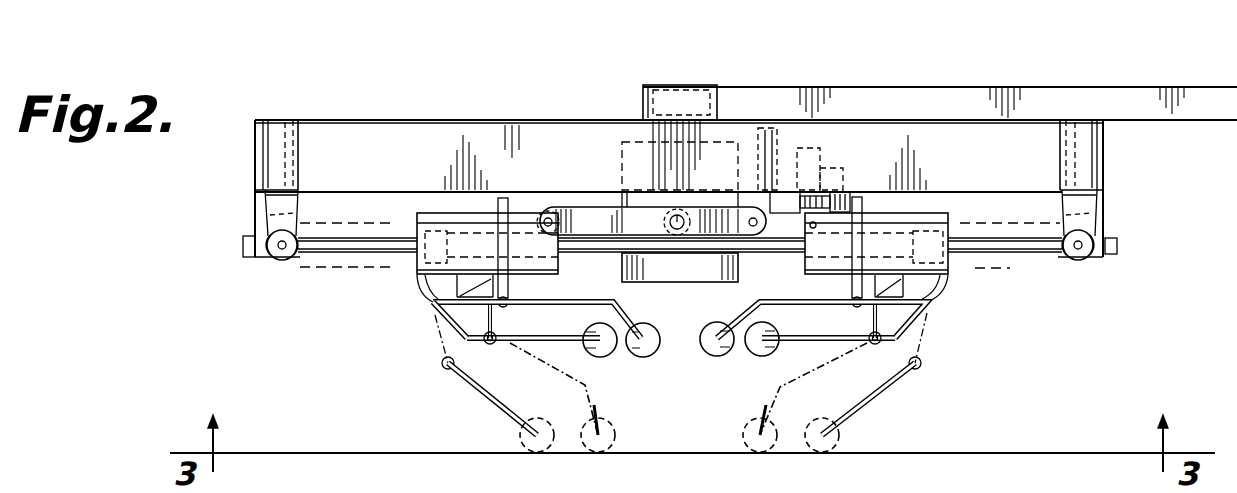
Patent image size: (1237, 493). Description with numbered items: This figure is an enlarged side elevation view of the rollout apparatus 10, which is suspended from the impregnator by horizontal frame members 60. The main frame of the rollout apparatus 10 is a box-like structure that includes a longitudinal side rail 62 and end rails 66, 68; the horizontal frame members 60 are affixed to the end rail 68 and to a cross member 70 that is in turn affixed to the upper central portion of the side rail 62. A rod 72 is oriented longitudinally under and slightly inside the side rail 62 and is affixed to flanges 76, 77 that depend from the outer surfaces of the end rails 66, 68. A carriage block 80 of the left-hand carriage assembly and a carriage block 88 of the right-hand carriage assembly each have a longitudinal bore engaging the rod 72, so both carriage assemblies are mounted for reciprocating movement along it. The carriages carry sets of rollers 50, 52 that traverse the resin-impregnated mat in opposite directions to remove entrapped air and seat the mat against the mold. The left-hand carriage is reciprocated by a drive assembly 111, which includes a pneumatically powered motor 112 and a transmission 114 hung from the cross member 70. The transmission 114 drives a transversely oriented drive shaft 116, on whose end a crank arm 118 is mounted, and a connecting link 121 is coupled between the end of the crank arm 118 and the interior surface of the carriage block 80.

The rollout apparatus 10 is at (212, 212).
The horizontal frame members 60 is at (1126, 104).
The side rail 62 is at (401, 120).
The end rail 66 is at (290, 118).
The end rail 68 is at (1105, 146).
The cross member 70 is at (692, 85).
The rod 72 is at (1020, 262).
The flange 76 is at (255, 163).
The flange 77 is at (1100, 213).
The carriage block 80 is at (478, 213).
The carriage block 88 is at (952, 256).
The drive assembly 111 is at (684, 300).
The motor 112 is at (807, 190).
The transmission 114 is at (745, 150).
The drive shaft 116 is at (672, 215).
The crank arm 118 is at (744, 258).
The connecting link 121 is at (588, 213).
The rollers 50 is at (505, 437).
The rollers 52 is at (740, 360).